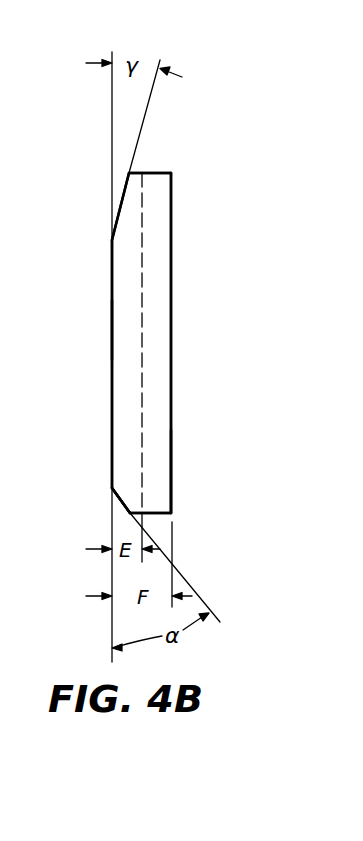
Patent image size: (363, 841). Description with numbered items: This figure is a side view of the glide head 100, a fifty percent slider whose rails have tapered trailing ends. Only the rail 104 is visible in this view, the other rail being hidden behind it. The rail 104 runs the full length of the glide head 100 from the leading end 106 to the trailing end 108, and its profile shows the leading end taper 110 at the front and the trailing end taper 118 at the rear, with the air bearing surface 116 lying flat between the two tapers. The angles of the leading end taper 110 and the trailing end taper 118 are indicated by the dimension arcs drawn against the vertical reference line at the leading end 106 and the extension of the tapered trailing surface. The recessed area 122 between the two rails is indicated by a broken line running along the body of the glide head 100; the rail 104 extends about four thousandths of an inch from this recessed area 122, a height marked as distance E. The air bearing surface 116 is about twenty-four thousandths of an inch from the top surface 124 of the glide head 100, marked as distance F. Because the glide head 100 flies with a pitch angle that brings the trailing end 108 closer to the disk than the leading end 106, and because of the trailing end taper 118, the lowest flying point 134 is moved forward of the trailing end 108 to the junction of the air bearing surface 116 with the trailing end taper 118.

The glide head 100 is at (82, 147).
The leading end taper 110 is at (112, 205).
The leading end 106 is at (150, 173).
The second rail 104 is at (124, 287).
The air bearing surface 116 is at (112, 332).
The recessed area 122 is at (162, 357).
The top surface 124 is at (172, 463).
The lowest flying point 134 is at (112, 490).
The trailing end taper 118 is at (114, 497).
The trailing end 108 is at (158, 516).